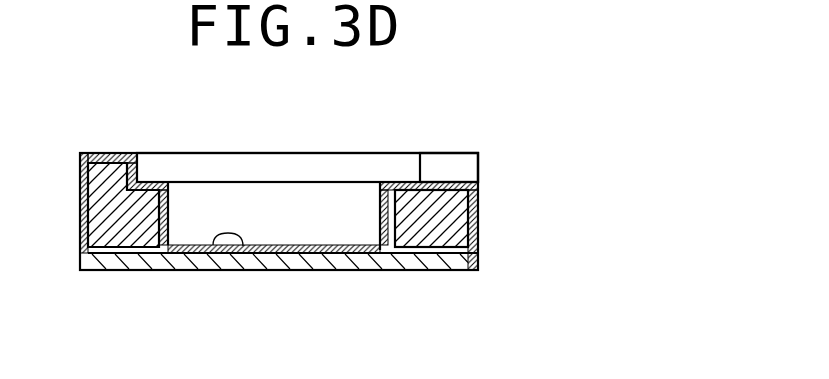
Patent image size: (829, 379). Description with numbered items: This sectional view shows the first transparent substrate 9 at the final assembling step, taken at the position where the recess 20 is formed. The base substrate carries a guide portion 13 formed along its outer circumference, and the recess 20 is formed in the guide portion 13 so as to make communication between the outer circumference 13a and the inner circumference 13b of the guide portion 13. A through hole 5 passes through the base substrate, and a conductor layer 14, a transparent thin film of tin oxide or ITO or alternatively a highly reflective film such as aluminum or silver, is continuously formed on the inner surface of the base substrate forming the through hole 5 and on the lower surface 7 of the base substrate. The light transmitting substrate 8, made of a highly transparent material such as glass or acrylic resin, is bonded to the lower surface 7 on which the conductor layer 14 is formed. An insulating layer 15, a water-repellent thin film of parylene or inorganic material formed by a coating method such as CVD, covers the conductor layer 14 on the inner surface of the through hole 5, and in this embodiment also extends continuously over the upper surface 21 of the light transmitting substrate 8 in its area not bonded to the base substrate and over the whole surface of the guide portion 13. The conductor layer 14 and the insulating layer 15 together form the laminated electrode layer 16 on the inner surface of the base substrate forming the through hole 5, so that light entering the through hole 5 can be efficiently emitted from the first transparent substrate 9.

The through hole 5 is at (172, 224).
The lower surface 7 is at (106, 256).
The light transmitting substrate 8 is at (272, 262).
The first transparent substrate 9 is at (435, 131).
The guide portion 13 is at (113, 156).
The outer circumference 13a is at (83, 178).
The inner circumference 13b is at (133, 175).
The conductor layer 14 is at (429, 250).
The insulating layer 15 is at (313, 250).
The electrode layer 16 is at (365, 232).
The recess 20 is at (455, 168).
The upper surface 21 is at (216, 246).